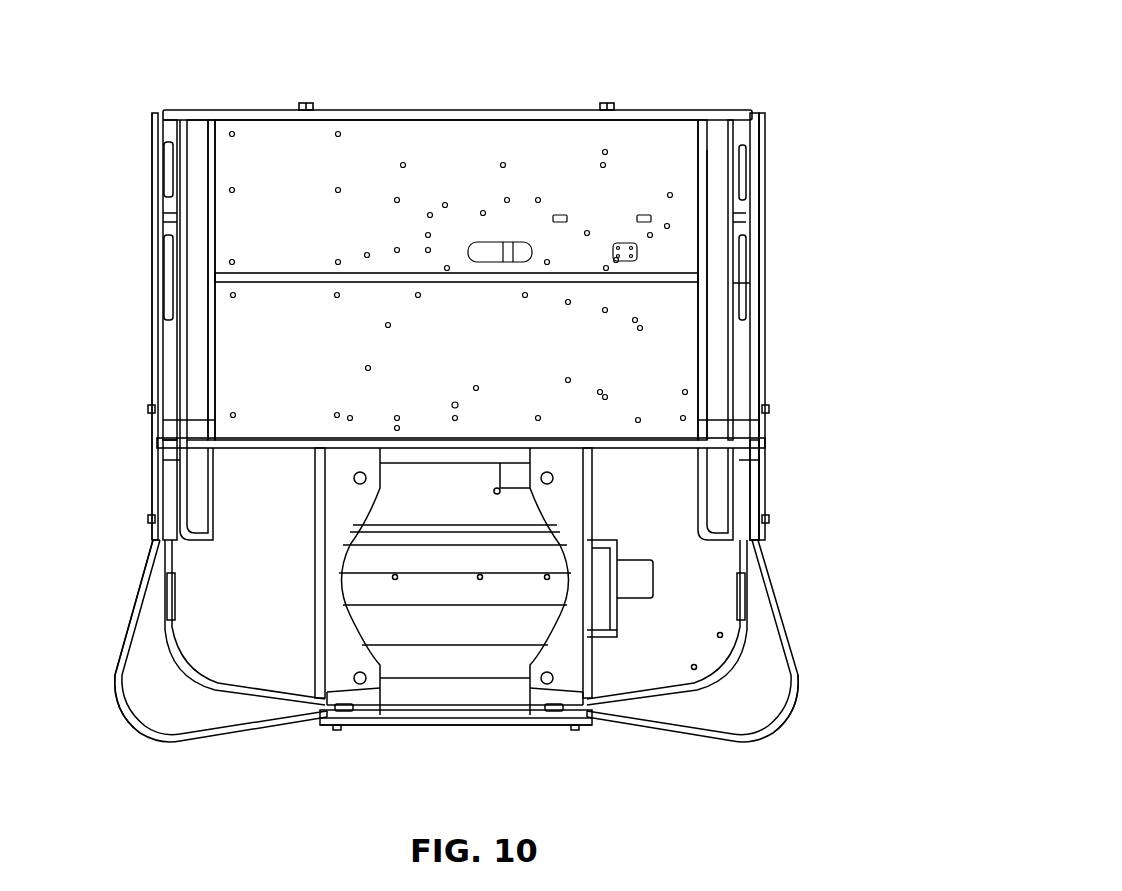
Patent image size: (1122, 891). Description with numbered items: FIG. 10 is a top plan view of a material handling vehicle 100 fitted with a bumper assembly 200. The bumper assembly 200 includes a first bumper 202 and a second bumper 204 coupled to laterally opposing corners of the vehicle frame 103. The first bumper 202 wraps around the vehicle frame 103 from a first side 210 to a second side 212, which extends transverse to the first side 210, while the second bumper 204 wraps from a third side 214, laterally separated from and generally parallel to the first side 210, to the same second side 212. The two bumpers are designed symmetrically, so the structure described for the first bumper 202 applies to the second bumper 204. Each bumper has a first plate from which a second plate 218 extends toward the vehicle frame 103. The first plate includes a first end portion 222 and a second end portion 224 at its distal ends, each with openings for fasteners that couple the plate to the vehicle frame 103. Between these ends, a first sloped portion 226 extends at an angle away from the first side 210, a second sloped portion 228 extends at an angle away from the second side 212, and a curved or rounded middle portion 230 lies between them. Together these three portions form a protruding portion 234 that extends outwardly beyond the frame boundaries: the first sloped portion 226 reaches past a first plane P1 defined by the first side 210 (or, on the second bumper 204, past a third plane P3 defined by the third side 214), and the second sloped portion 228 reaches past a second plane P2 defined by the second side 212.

The material handling vehicle 100 is at (742, 42).
The vehicle frame 103 is at (780, 197).
The first side 210 is at (775, 266).
The third side 214 is at (148, 322).
The first end portion 222 is at (152, 474).
The second side 212 is at (405, 740).
The second end portion 224 is at (326, 730).
The first bumper 202 is at (850, 592).
The second bumper 204 is at (93, 618).
The first sloped portion 226 is at (137, 596).
The second plate 218 is at (137, 666).
The protruding portion 234 is at (93, 697).
The middle portion 230 is at (127, 722).
The second sloped portion 228 is at (232, 747).
The bumper assembly 200 is at (848, 778).
The first plane P1 is at (762, 350).
The second plane P2 is at (452, 728).
The third plane P3 is at (157, 370).